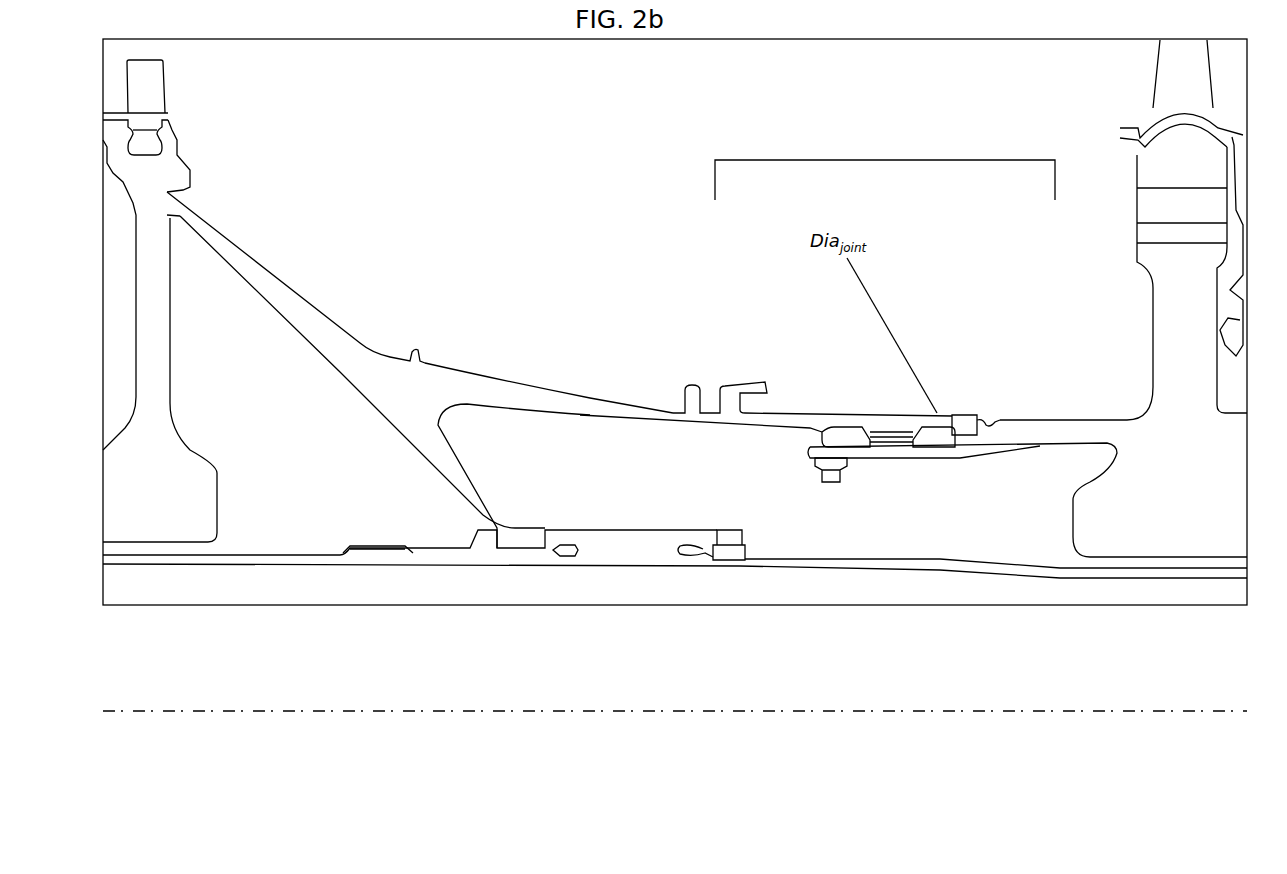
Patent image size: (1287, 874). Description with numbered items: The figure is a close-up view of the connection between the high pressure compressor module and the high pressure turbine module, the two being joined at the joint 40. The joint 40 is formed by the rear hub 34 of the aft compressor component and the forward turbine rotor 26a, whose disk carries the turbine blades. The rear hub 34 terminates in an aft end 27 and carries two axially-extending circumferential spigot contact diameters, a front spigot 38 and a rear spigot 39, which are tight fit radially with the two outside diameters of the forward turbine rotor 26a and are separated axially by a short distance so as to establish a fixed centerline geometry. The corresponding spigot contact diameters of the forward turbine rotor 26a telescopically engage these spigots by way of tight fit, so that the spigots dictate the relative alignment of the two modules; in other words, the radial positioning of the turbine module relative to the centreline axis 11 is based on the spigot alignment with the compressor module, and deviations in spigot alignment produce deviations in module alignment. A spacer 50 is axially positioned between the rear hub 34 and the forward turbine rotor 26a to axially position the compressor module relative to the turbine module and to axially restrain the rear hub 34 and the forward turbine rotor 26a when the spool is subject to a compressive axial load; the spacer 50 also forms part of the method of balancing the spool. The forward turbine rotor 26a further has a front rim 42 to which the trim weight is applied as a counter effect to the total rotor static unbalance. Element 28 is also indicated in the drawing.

The centreline axis 11 is at (198, 711).
The forward turbine rotor 26a is at (1122, 321).
The aft end 27 is at (965, 428).
The rotor casing 28 is at (985, 423).
The rear hub 34 is at (363, 353).
The front spigot 38 is at (826, 436).
The rear spigot 39 is at (952, 415).
The joint 40 is at (885, 160).
The front rim 42 is at (827, 487).
The spacer 50 is at (980, 425).